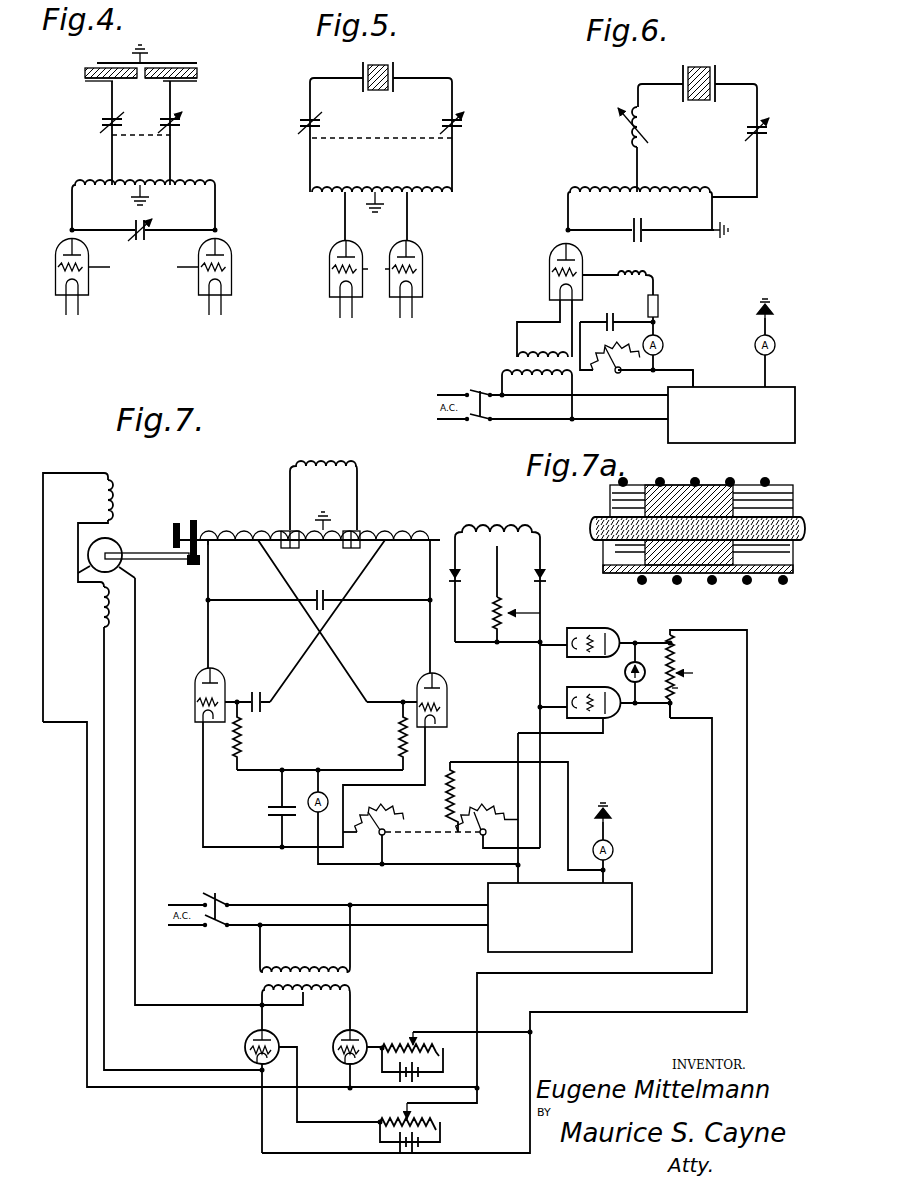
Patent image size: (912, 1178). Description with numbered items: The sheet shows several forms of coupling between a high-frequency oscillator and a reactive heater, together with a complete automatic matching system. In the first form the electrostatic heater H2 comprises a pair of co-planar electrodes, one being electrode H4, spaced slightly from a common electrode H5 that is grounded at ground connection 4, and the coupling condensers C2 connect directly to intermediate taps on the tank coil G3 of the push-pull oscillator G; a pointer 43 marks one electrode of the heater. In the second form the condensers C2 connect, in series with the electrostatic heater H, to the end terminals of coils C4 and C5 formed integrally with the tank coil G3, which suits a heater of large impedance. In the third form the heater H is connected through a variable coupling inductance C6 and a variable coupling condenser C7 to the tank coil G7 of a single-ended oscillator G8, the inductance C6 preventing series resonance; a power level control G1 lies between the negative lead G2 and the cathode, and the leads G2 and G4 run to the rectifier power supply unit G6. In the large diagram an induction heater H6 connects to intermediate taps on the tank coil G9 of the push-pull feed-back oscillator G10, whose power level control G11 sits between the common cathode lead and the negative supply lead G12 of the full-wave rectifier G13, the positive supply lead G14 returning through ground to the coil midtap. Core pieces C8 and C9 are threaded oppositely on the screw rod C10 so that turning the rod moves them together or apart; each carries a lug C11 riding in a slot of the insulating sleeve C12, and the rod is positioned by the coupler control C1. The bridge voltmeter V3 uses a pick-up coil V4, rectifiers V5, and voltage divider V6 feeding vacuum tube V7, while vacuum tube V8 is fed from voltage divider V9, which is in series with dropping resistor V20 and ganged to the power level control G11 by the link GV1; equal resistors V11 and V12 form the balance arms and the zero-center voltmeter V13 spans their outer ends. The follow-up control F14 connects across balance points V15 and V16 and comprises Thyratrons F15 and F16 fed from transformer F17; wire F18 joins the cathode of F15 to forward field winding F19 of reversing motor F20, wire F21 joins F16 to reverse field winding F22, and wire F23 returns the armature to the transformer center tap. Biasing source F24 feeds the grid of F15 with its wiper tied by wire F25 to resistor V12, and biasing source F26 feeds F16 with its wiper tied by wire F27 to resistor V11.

In FIG. 4, the ground connection 4 is at (150, 47).
In FIG. 4, the electrostatic heater H2 is at (194, 62).
In FIG. 4, the crystal electrode 43 is at (94, 65).
In FIG. 4, the electrode H4 is at (96, 80).
In FIG. 4, the common electrode H5 is at (186, 82).
In FIG. 4, the coupling condensers C2 is at (100, 126).
In FIG. 5, the coupling condensers C2 is at (300, 128).
In FIG. 4, the tank coil G3 is at (190, 183).
In FIG. 5, the tank coil G3 is at (378, 190).
In FIG. 4, the oscillator G is at (222, 227).
In FIG. 5, the oscillator G is at (422, 228).
In FIG. 5, the reactive heater H is at (408, 63).
In FIG. 6, the reactive heater H is at (722, 65).
In FIG. 5, the coil C4 is at (345, 190).
In FIG. 5, the coil C5 is at (408, 190).
In FIG. 6, the variable coupling inductance C6 is at (632, 126).
In FIG. 6, the variable coupling condenser C7 is at (769, 131).
In FIG. 6, the tank coil G7 is at (620, 186).
In FIG. 6, the single-ended oscillator G8 is at (669, 273).
In FIG. 6, the power level control G1 is at (605, 381).
In FIG. 6, the negative power supply lead G2 is at (693, 372).
In FIG. 6, the positive power supply lead G4 is at (762, 368).
In FIG. 6, the rectifier power supply unit G6 is at (748, 443).
In FIG. 7, the reverse field winding F22 is at (114, 498).
In FIG. 7, the reversing motor F20 is at (122, 539).
In FIG. 7, the forward field winding F19 is at (103, 614).
In FIG. 7, the coupler control C1 is at (181, 522).
In FIG. 7A, the screw-threaded rod C10 is at (598, 531).
In FIG. 7, the screw-threaded rod C10 is at (201, 530).
In FIG. 7A, the core piece C8 is at (720, 487).
In FIG. 7, the core piece C8 is at (287, 530).
In FIG. 7, the core piece C9 is at (361, 530).
In FIG. 7, the tank coil G9 is at (400, 530).
In FIG. 7, the induction heater H6 is at (334, 465).
In FIG. 7, the push-pull feed-back oscillator G10 is at (356, 702).
In FIG. 7, the pick-up coil V4 is at (495, 531).
In FIG. 7, the rectifiers V5 is at (461, 578).
In FIG. 7, the voltage divider V6 is at (491, 618).
In FIG. 7, the vacuum tube V7 is at (604, 628).
In FIG. 7, the vacuum tube V8 is at (603, 733).
In FIG. 7, the zero-center voltmeter V13 is at (624, 672).
In FIG. 7, the balance point V15 is at (670, 631).
In FIG. 7, the bridge resistor V11 is at (676, 658).
In FIG. 7, the bridge resistor V12 is at (678, 690).
In FIG. 7, the balance point V16 is at (671, 709).
In FIG. 7, the high frequency balanced bridge voltmeter V3 is at (637, 713).
In FIG. 7, the voltage divider V9 is at (484, 798).
In FIG. 7, the fixed voltage dropping resistor V20 is at (448, 793).
In FIG. 7, the power level control G11 is at (369, 848).
In FIG. 7, the mechanical interconnection GV1 is at (418, 837).
In FIG. 7, the negative supply lead G12 is at (513, 876).
In FIG. 7, the positive supply lead G14 is at (607, 879).
In FIG. 7, the full-wave power supply rectifier G13 is at (615, 941).
In FIG. 7, the wire F23 is at (134, 805).
In FIG. 7, the transformer F17 is at (256, 978).
In FIG. 7, the follow-up control F14 is at (409, 1010).
In FIG. 7, the gaseous discharge tube F15 is at (247, 1046).
In FIG. 7, the gaseous discharge tube F16 is at (360, 1036).
In FIG. 7, the wire F18 is at (123, 1069).
In FIG. 7, the wire F21 is at (118, 1089).
In FIG. 7, the wire F25 is at (524, 975).
In FIG. 7, the negative biasing source F26 is at (445, 1068).
In FIG. 7, the negative biasing source F24 is at (443, 1133).
In FIG. 7, the wire F27 is at (555, 1014).
In FIG. 7A, the lug C11 is at (683, 487).
In FIG. 7A, the sleeve C12 is at (612, 490).